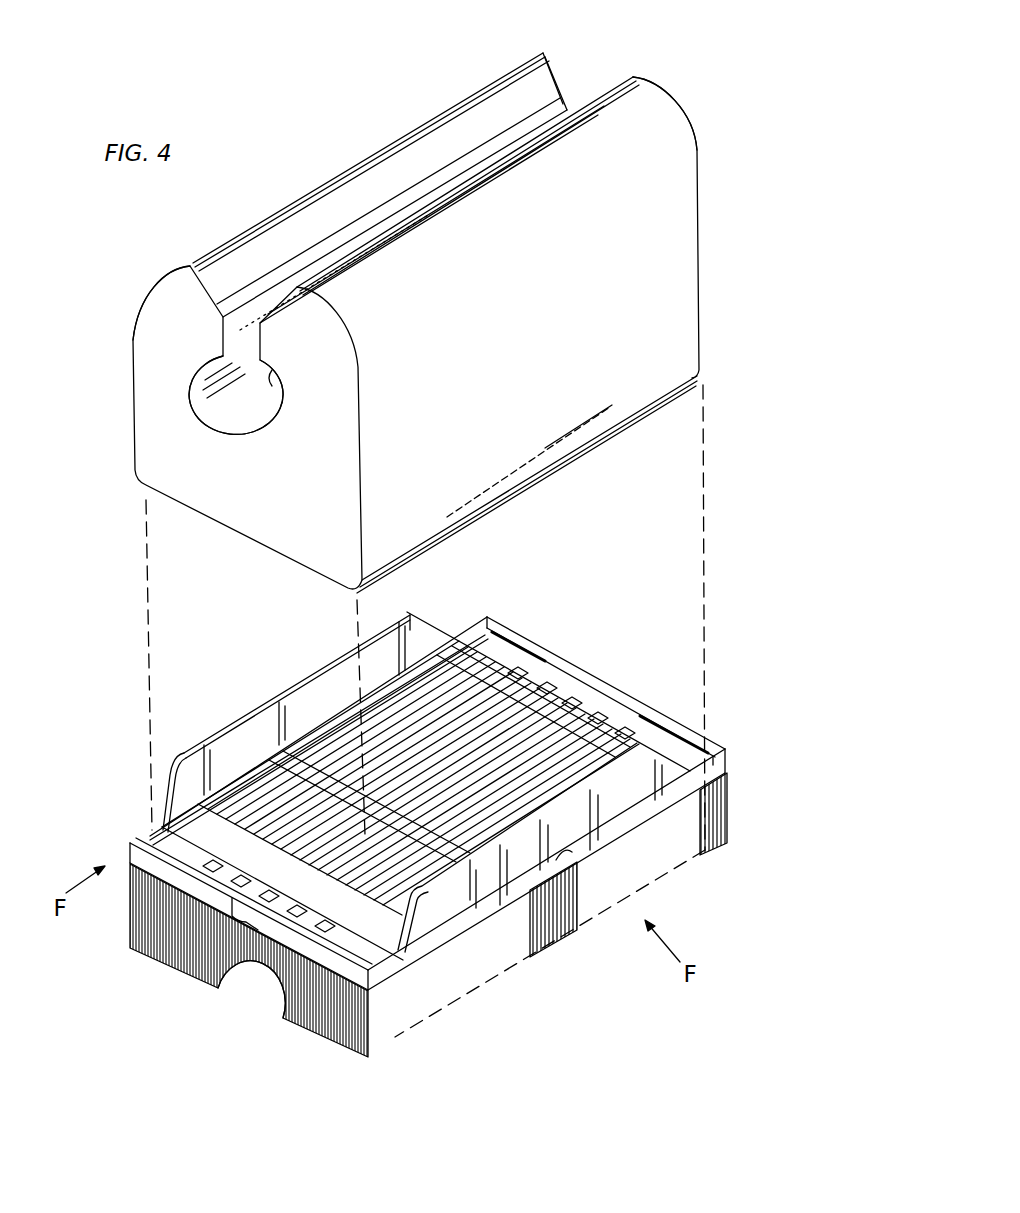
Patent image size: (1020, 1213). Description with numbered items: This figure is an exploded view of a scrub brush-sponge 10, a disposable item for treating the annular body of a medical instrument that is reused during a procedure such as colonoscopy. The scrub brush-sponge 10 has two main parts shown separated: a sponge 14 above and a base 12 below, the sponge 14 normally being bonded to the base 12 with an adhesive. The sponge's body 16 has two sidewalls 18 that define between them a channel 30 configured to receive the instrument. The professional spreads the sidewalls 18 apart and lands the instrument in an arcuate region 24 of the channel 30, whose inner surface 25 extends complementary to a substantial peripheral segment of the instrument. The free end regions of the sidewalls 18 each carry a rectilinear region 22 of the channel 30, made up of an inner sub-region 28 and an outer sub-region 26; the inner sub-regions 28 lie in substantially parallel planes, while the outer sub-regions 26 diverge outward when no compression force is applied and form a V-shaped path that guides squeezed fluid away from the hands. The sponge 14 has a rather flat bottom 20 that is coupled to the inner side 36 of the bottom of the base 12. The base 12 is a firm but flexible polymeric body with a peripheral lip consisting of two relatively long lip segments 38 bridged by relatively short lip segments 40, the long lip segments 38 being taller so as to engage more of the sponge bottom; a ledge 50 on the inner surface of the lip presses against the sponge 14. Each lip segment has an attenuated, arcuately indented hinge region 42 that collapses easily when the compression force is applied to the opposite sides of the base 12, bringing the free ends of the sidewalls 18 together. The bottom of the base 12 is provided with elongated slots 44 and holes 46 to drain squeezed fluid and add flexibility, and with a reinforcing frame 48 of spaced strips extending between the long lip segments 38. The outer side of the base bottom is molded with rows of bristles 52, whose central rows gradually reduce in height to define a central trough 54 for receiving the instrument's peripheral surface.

The scrub brush-sponge 10 is at (56, 416).
The base 12 is at (408, 819).
The sponge 14 is at (405, 300).
The sponge's body 16 is at (688, 248).
The sidewalls 18 is at (190, 266).
The flat bottom 20 is at (252, 546).
The rectilinear region 22 is at (232, 324).
The arcuate region 24 is at (264, 414).
The inner surface 25 is at (278, 384).
The outer sub-region 26 is at (368, 182).
The inner sub-region 28 is at (258, 312).
The channel 30 is at (232, 402).
The inner side 36 is at (168, 846).
The long lip segments 38 is at (246, 735).
The short lip segments 40 is at (437, 786).
The hinge regions 42 is at (234, 958).
The elongated slots 44 is at (418, 745).
The holes 46 is at (576, 708).
The reinforcing frame 48 is at (472, 680).
The ledge 50 is at (314, 738).
The bristles 52 is at (186, 958).
The central trough 54 is at (266, 1000).